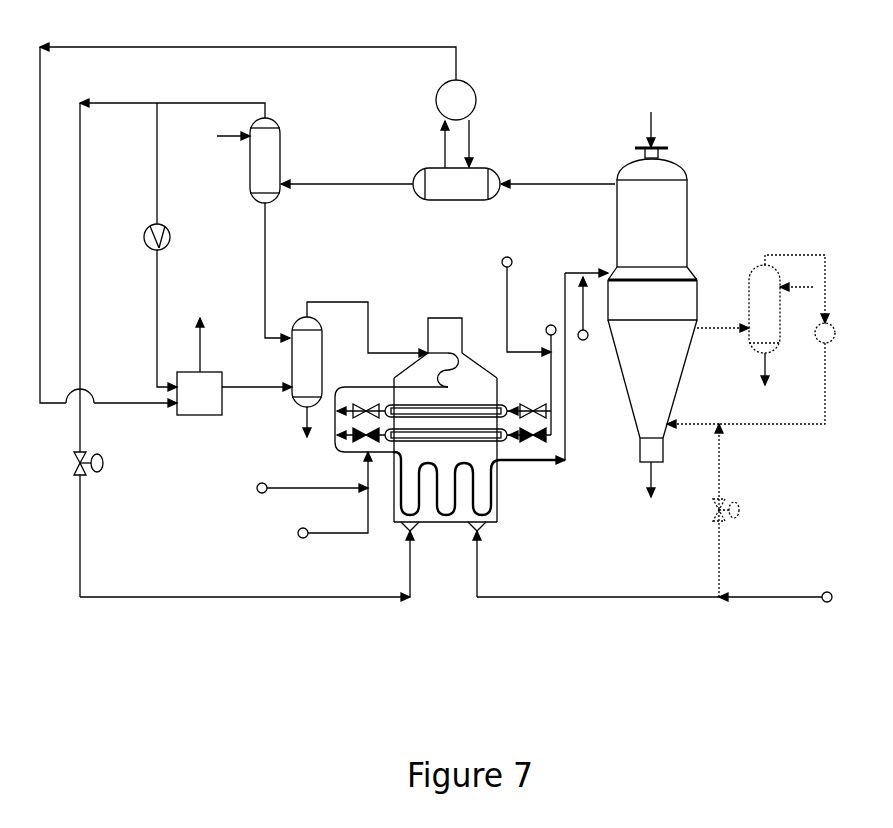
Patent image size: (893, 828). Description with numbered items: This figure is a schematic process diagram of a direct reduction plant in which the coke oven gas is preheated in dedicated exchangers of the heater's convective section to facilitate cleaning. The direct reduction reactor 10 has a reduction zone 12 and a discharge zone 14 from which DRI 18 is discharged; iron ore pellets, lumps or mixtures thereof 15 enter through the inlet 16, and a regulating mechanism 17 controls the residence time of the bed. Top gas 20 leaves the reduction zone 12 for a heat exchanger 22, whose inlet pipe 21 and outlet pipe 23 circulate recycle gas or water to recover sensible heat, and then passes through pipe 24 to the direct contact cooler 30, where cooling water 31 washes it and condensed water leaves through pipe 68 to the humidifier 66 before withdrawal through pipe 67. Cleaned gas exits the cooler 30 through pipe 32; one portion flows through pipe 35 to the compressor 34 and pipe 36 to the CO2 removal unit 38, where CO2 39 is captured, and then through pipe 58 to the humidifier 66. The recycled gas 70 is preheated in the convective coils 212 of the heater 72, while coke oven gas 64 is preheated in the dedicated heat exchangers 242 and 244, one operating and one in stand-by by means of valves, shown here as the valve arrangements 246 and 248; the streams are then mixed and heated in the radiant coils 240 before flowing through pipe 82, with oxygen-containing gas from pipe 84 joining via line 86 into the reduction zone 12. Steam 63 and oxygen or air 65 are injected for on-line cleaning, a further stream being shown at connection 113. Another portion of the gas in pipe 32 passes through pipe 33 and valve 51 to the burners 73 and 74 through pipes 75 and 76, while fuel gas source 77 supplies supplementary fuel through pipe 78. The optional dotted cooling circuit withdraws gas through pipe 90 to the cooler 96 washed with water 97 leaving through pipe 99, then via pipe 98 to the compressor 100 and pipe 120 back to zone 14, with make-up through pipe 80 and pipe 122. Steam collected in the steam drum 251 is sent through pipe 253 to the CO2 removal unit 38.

The direct reduction reactor 10 is at (672, 298).
The reduction zone 12 is at (638, 241).
The discharge zone 14 is at (638, 370).
The iron ore pellets, lumps or mixtures thereof 15 is at (648, 121).
The inlet 16 is at (668, 149).
The regulating mechanism 17 is at (638, 447).
The DRI 18 is at (648, 465).
The top gas 20 is at (590, 180).
The inlet pipe 21 is at (471, 137).
The heat exchanger 22 is at (450, 196).
The outlet pipe 23 is at (445, 141).
The pipe 24 is at (392, 186).
The direct contact cooler 30 is at (250, 191).
The cooling water 31 is at (230, 138).
The pipe 32 is at (254, 103).
The pipe 33 is at (107, 103).
The compressor 34 is at (170, 235).
The pipe 35 is at (157, 202).
The pipe 36 is at (157, 306).
The CO2 removal unit 38 is at (202, 416).
The CO2 39 is at (200, 346).
The valve 51 is at (104, 470).
The pipe 58 is at (230, 389).
The oxidizing agent 63 is at (298, 537).
The coke oven gas 64 is at (547, 326).
The oxygen or air 65 is at (258, 484).
The humidifier 66 is at (292, 369).
The pipe 67 is at (304, 412).
The pipe 68 is at (268, 285).
The recycled gas 70 is at (320, 302).
The heater 72 is at (432, 312).
The burner 73 is at (404, 529).
The burner 74 is at (482, 529).
The pipe 75 is at (411, 589).
The pipe 76 is at (479, 576).
The fuel gas source 77 is at (800, 597).
The pipe 78 is at (616, 597).
The pipe 80 is at (722, 475).
The pipe 82 is at (566, 371).
The pipe 84 is at (587, 335).
The line 86 is at (590, 272).
The pipe 90 is at (704, 331).
The cooler 96 is at (780, 341).
The water 97 is at (812, 290).
The pipe 98 is at (804, 254).
The pipe 99 is at (770, 367).
The compressor 100 is at (836, 335).
The inlet stream 113 is at (502, 260).
The pipe 120 is at (816, 426).
The pipe 122 is at (680, 431).
The convective coils 212 is at (455, 353).
The coils 240 is at (483, 478).
The heat exchanger 242 is at (453, 405).
The heat exchanger 244 is at (482, 442).
The valve manifold 246 is at (538, 404).
The valve manifold 248 is at (372, 404).
The steam drum 251 is at (474, 86).
The pipe 253 is at (246, 47).